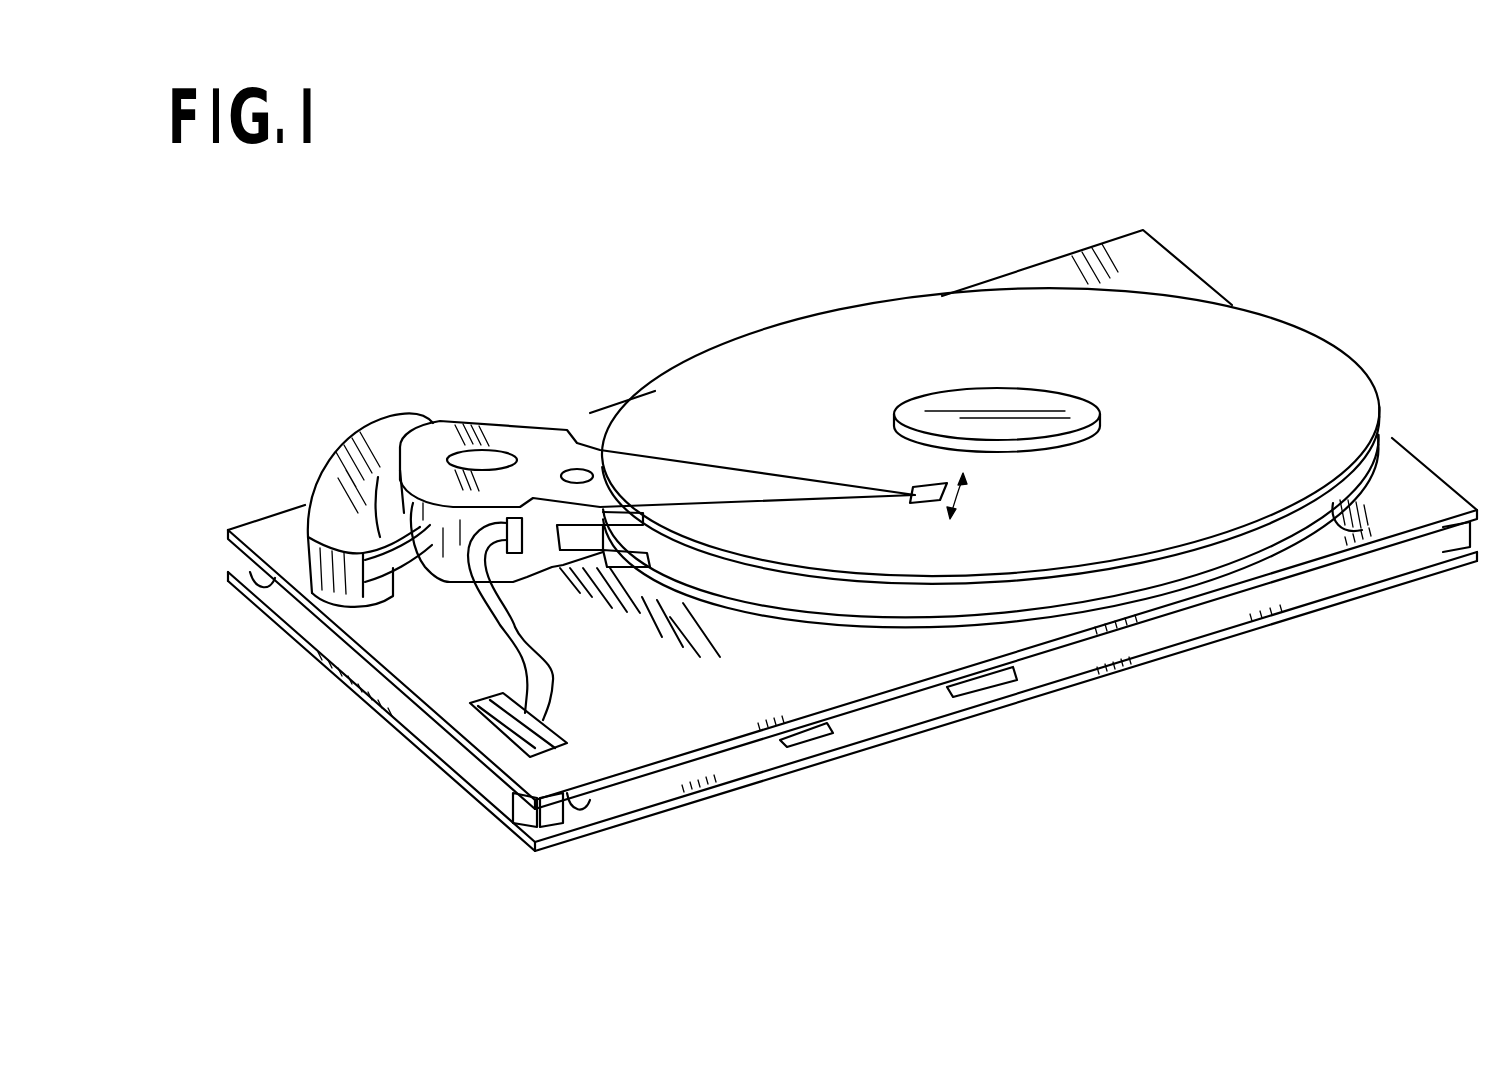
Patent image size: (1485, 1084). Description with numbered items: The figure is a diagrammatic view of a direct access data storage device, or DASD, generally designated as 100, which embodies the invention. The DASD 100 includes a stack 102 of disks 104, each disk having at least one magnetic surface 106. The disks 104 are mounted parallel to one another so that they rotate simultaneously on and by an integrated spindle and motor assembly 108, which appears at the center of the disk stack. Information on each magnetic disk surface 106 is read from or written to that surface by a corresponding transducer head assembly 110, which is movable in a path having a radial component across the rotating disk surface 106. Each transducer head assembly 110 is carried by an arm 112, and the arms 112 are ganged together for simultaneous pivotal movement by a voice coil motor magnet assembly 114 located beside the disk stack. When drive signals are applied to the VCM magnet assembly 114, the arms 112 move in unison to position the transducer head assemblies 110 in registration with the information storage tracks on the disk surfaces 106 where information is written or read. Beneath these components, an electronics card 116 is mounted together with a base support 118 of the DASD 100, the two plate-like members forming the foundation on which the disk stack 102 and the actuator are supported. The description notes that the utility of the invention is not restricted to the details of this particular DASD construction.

The direct access data storage device (DASD) 100 is at (852, 481).
The stack 102 is at (1279, 352).
The disks 104 is at (1370, 520).
The magnetic surface 106 is at (940, 320).
The integrated spindle and motor assembly 108 is at (1032, 407).
The transducer head assembly 110 is at (930, 483).
The arm 112 is at (662, 473).
The voice coil motor (VCM) magnet assembly 114 is at (355, 420).
The electronics card 116 is at (890, 738).
The base support 118 is at (1403, 467).